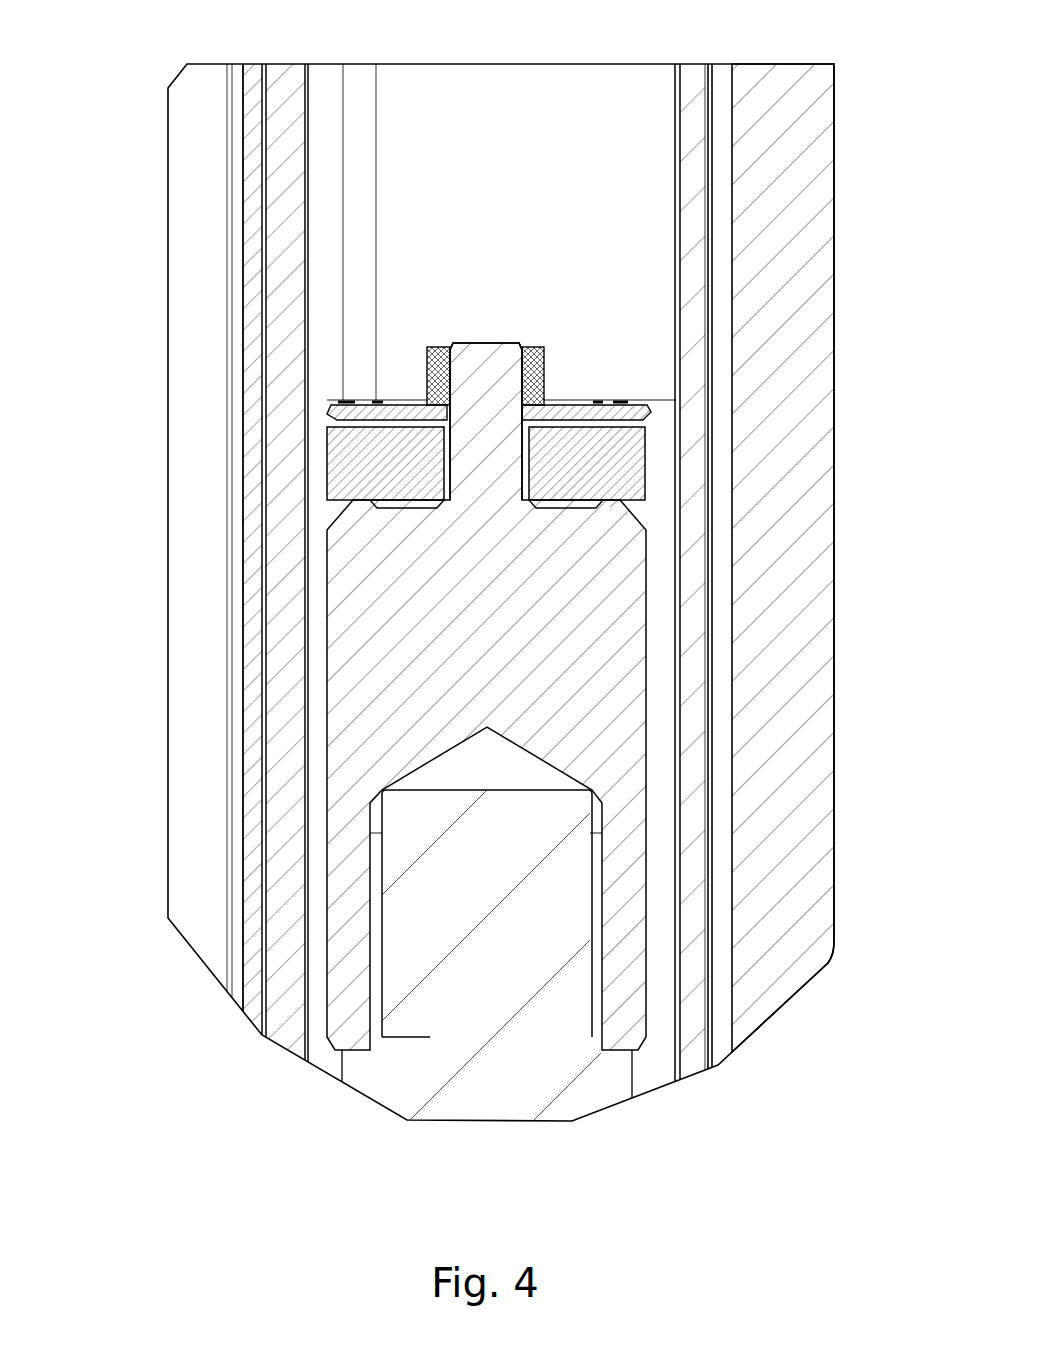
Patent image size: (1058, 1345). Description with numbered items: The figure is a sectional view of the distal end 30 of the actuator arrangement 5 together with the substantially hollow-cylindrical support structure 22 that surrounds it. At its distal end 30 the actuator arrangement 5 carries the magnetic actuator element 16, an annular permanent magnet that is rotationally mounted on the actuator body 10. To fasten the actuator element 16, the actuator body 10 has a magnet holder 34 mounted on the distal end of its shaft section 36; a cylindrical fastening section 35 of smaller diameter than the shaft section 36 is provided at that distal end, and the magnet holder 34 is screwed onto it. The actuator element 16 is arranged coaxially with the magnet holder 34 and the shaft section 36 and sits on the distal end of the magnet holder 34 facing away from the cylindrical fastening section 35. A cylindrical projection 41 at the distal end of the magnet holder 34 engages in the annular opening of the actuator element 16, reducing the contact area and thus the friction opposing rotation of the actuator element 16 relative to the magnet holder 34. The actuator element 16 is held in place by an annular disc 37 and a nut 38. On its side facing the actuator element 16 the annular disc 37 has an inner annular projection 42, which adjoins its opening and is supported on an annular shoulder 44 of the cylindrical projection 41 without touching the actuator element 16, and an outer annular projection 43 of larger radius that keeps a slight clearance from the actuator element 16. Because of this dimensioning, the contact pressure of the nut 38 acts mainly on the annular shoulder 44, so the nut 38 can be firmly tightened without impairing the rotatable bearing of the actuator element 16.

The distal end 30 is at (138, 135).
The support structure 22 is at (792, 263).
The actuator arrangement 5 is at (587, 222).
The magnet holder 34 is at (395, 670).
The actuator body 10 is at (355, 768).
The cylindrical projection 41 is at (483, 393).
The nut 38 is at (437, 365).
The annular disc 37 is at (578, 406).
The inner annular projection 42 is at (557, 403).
The outer annular projection 43 is at (633, 400).
The annular shoulder 44 is at (420, 400).
The magnetic actuator element 16 is at (372, 473).
The cylindrical fastening section 35 is at (465, 903).
The shaft section 36 is at (545, 1077).